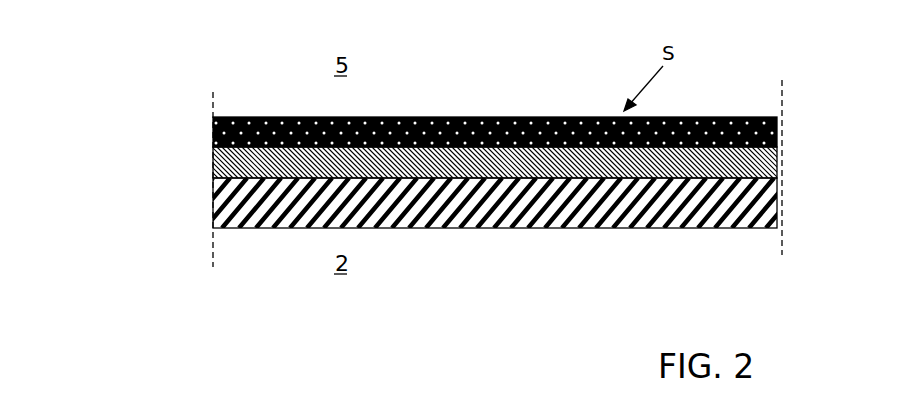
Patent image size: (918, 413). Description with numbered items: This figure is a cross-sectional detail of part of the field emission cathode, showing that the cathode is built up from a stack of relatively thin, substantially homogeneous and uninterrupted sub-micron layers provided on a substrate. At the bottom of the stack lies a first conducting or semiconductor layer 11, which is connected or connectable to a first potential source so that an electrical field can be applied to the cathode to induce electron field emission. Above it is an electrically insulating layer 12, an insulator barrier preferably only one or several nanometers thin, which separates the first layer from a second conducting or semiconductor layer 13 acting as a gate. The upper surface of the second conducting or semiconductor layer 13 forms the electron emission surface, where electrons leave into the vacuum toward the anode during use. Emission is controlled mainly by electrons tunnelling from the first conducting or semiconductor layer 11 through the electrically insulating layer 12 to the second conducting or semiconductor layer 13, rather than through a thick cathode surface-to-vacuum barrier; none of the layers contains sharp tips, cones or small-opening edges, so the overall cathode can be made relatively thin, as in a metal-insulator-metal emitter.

The first conducting or semiconductor layer 11 is at (253, 208).
The electrically insulating layer 12 is at (225, 166).
The second conducting or semiconductor layer 13 is at (213, 132).